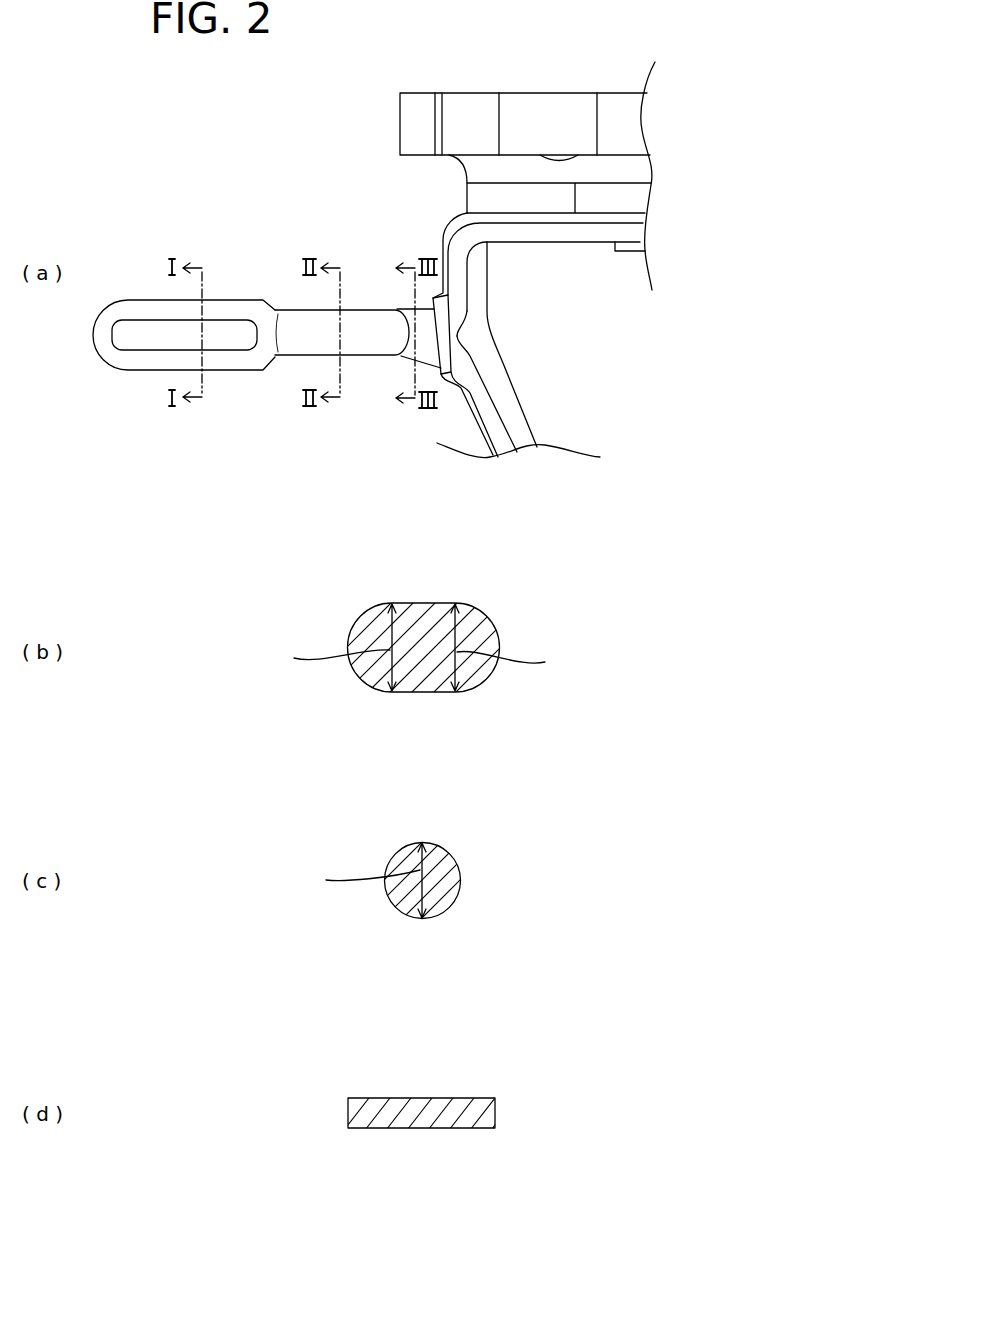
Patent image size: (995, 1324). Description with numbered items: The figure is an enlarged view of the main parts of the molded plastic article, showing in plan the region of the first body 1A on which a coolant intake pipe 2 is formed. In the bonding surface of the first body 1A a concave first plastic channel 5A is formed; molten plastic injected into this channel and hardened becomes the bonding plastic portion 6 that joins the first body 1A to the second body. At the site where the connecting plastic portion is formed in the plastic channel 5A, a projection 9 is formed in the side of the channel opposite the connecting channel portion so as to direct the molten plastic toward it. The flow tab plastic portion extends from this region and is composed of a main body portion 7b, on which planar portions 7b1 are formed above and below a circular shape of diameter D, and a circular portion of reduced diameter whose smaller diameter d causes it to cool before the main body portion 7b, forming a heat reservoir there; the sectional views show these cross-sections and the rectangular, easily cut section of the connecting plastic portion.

The first body 1A is at (663, 158).
The coolant intake pipe 2 is at (538, 100).
The first plastic channel 5A is at (450, 303).
The bonding plastic portion 6 is at (447, 315).
The main body portion 7b is at (150, 360).
The planar portion 7b1 is at (420, 603).
The projection 9 is at (457, 337).